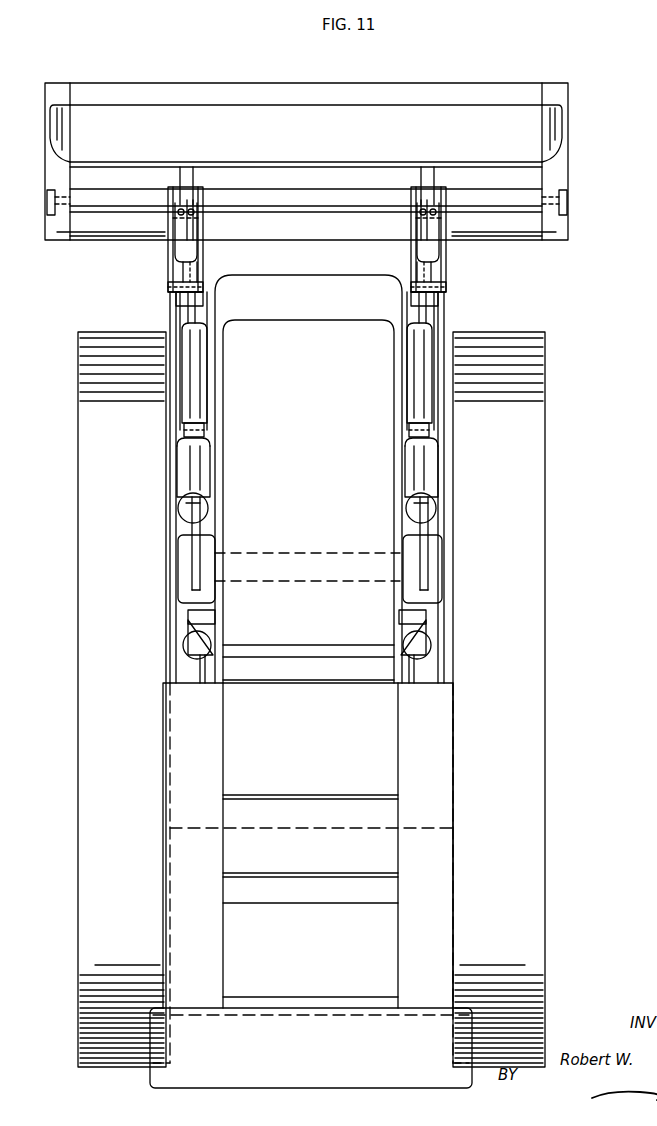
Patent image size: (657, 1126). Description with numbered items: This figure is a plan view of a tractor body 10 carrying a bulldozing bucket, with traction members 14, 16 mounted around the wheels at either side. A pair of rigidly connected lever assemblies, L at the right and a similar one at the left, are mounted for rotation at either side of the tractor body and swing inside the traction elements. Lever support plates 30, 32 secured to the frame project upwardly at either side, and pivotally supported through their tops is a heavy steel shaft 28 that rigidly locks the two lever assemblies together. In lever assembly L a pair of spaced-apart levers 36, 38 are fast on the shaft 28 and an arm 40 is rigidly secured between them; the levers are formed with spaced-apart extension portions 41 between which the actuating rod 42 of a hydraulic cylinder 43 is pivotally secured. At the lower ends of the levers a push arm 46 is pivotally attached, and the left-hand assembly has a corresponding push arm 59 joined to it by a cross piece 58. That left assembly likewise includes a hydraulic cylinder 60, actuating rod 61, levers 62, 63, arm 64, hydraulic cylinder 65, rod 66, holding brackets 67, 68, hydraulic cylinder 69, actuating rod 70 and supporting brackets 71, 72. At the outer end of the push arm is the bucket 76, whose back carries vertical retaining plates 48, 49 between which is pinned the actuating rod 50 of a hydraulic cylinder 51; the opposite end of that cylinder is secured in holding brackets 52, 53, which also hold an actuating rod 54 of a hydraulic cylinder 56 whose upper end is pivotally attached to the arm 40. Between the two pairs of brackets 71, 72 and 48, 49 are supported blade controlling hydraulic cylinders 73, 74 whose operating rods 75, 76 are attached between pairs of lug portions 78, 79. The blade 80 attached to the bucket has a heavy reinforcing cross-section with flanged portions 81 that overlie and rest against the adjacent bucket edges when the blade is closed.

The tractor body 10 is at (311, 885).
The traction member 14 is at (544, 796).
The traction member 16 is at (80, 776).
The shaft 28 is at (335, 582).
The lever support plate 30 is at (217, 624).
The lever support plate 32 is at (400, 628).
The lever 36 is at (405, 566).
The lever 38 is at (440, 550).
The arm 40 is at (424, 532).
The extension portion 41 is at (440, 630).
The actuating rod 42 is at (445, 640).
The hydraulic cylinder 43 is at (440, 671).
The push arm 46 is at (441, 302).
The vertical retaining plate 48 is at (449, 279).
The vertical retaining plate 49 is at (412, 266).
The actuating rod 50 is at (412, 302).
The hydraulic cylinder 51 is at (430, 334).
The holding bracket 52 is at (441, 420).
The holding bracket 53 is at (405, 426).
The actuating rod 54 is at (399, 441).
The hydraulic cylinder 56 is at (436, 470).
The cross piece 58 is at (292, 274).
The push arm 59 is at (180, 300).
The hydraulic cylinder 60 is at (186, 680).
The actuating rod 61 is at (190, 640).
The lever 62 is at (180, 592).
The lever 63 is at (216, 602).
The arm 64 is at (192, 547).
The hydraulic cylinder 65 is at (186, 480).
The rod 66 is at (176, 441).
The holding bracket 67 is at (182, 420).
The holding bracket 68 is at (212, 430).
The hydraulic cylinder 69 is at (185, 378).
The actuating rod 70 is at (190, 308).
The supporting bracket 71 is at (170, 268).
The supporting bracket 72 is at (205, 264).
The blade controlling hydraulic cylinder 73 is at (182, 250).
The blade controlling hydraulic cylinder 74 is at (437, 254).
The operating rod 75 is at (196, 228).
The bucket 76 is at (434, 228).
The lug portion 78 is at (197, 177).
The lug portion 79 is at (440, 180).
The blade 80 is at (540, 160).
The flanged portion 81 is at (573, 118).
The lever assembly L is at (452, 450).